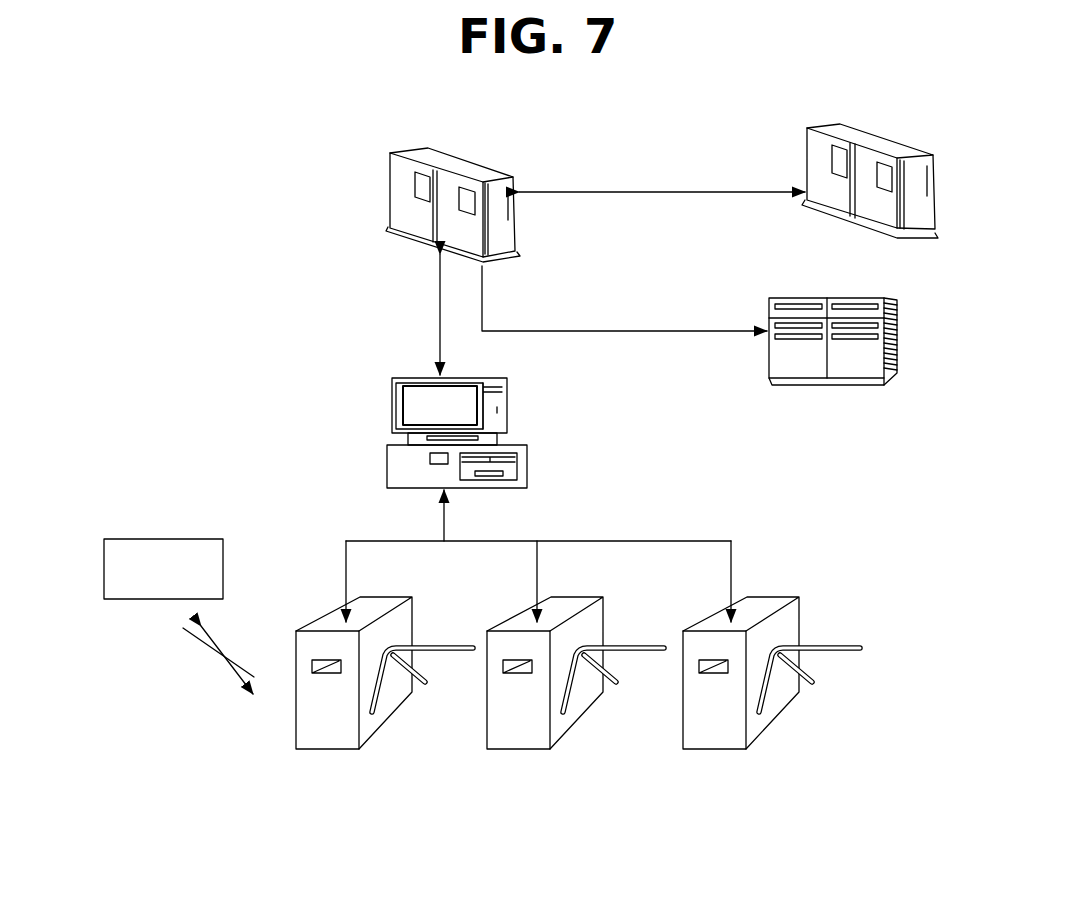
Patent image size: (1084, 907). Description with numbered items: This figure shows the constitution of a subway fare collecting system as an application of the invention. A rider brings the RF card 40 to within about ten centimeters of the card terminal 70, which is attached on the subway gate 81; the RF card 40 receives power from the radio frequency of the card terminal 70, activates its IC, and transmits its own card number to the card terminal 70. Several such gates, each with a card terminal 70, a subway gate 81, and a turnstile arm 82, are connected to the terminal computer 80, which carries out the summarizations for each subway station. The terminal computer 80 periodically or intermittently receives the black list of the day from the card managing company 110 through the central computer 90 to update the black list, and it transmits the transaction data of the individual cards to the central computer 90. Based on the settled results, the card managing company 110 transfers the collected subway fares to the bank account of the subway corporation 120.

The RF card 40 is at (165, 538).
The card terminal 70 is at (562, 679).
The terminal computer 80 is at (392, 411).
The subway gate 81 is at (326, 738).
The turnstile arm 82 is at (833, 645).
The central computer 90 is at (410, 152).
The card managing company 110 is at (807, 162).
The subway corporation 120 is at (790, 297).